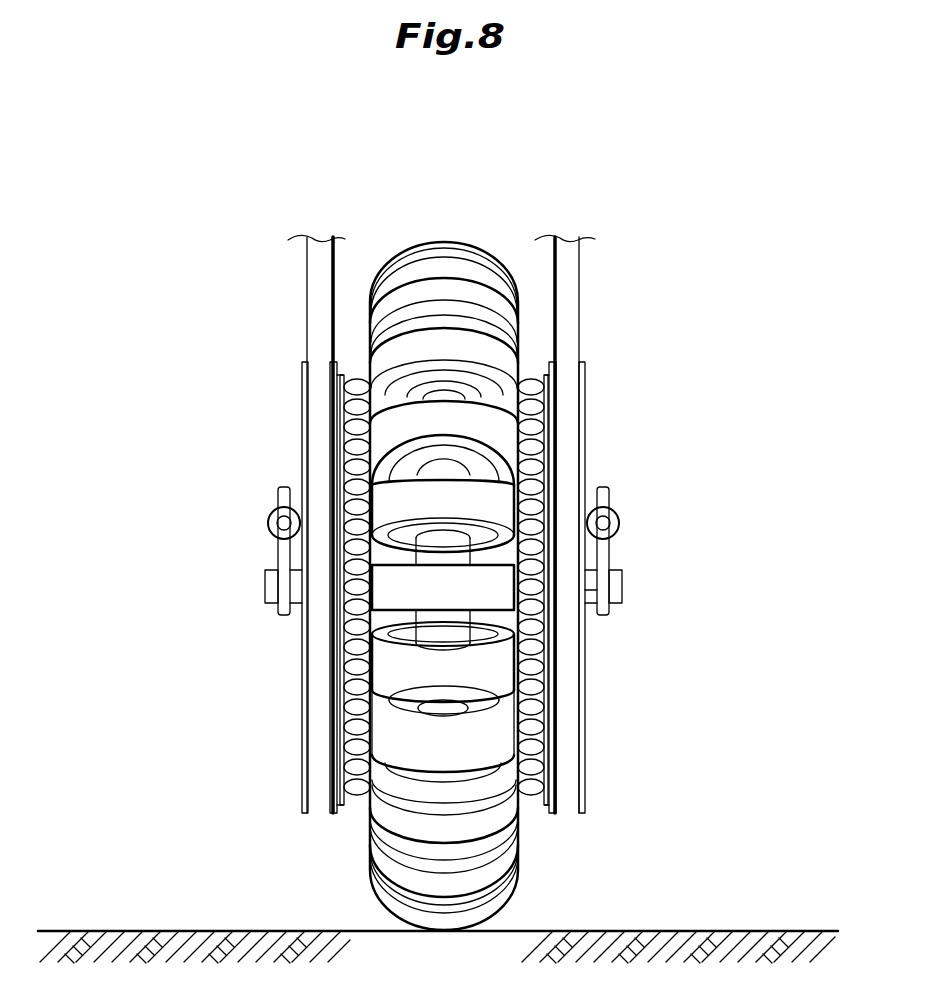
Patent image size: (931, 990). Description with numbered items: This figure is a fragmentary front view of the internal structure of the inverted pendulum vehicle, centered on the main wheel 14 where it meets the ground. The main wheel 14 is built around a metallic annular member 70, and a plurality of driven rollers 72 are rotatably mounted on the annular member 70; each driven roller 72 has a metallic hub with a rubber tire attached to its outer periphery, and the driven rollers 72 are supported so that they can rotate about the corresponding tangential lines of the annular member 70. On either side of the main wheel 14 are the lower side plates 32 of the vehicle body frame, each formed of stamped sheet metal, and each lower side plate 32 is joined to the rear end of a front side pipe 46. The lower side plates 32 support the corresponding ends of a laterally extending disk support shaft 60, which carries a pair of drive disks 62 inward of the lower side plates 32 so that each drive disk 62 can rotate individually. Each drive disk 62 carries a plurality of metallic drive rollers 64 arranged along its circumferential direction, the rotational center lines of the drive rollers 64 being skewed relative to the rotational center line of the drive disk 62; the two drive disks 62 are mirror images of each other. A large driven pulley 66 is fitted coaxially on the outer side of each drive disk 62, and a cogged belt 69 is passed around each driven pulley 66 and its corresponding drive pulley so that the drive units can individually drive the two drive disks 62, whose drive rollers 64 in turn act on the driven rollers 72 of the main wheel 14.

The main wheel 14 is at (460, 586).
The lower side plate 32 is at (276, 556).
The front side pipe 46 is at (270, 515).
The disk support shaft 60 is at (590, 598).
The drive disk 62 is at (345, 472).
The drive roller 64 is at (549, 462).
The driven pulley 66 is at (303, 720).
The cogged belt 69 is at (318, 292).
The annular member 70 is at (449, 626).
The driven roller 72 is at (473, 418).